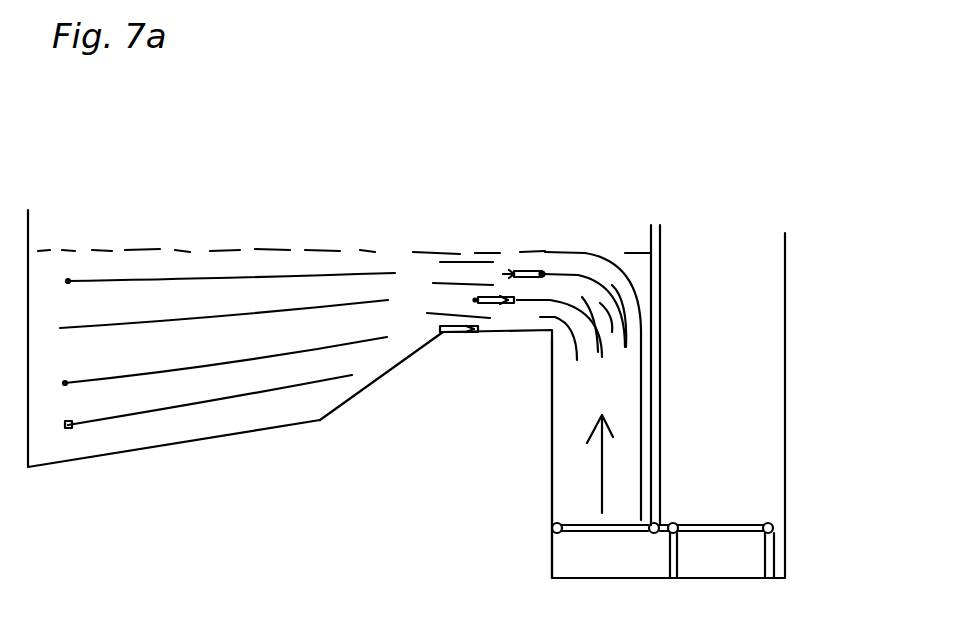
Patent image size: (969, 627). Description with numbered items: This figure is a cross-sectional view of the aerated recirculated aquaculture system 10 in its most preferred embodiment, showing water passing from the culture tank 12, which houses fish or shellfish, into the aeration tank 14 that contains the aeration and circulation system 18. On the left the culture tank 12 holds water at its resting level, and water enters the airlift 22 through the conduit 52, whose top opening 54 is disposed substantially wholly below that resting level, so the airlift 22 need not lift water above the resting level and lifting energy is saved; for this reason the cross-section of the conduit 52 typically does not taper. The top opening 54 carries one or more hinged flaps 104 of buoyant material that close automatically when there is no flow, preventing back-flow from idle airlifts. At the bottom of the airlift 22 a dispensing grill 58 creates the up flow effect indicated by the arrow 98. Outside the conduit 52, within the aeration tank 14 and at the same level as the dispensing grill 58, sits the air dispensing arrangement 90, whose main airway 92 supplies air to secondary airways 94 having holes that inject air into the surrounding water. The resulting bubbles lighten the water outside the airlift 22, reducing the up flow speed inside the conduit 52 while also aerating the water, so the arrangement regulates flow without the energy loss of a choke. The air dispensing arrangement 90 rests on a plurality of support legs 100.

The aerated recirculated aquaculture system 10 is at (360, 198).
The culture tank 12 is at (28, 232).
The aeration tank 14 is at (785, 413).
The aeration and circulation system 18 is at (552, 425).
The airlift 22 is at (552, 490).
The conduit 52 is at (590, 257).
The top opening 54 is at (533, 262).
The dispensing grill 58 is at (585, 532).
The air dispensing arrangement 90 is at (750, 523).
The main airway 92 is at (775, 528).
The secondary airway 94 is at (728, 528).
The arrow 98 is at (600, 472).
The support leg 100 is at (678, 563).
The hinged flap 104 is at (513, 272).